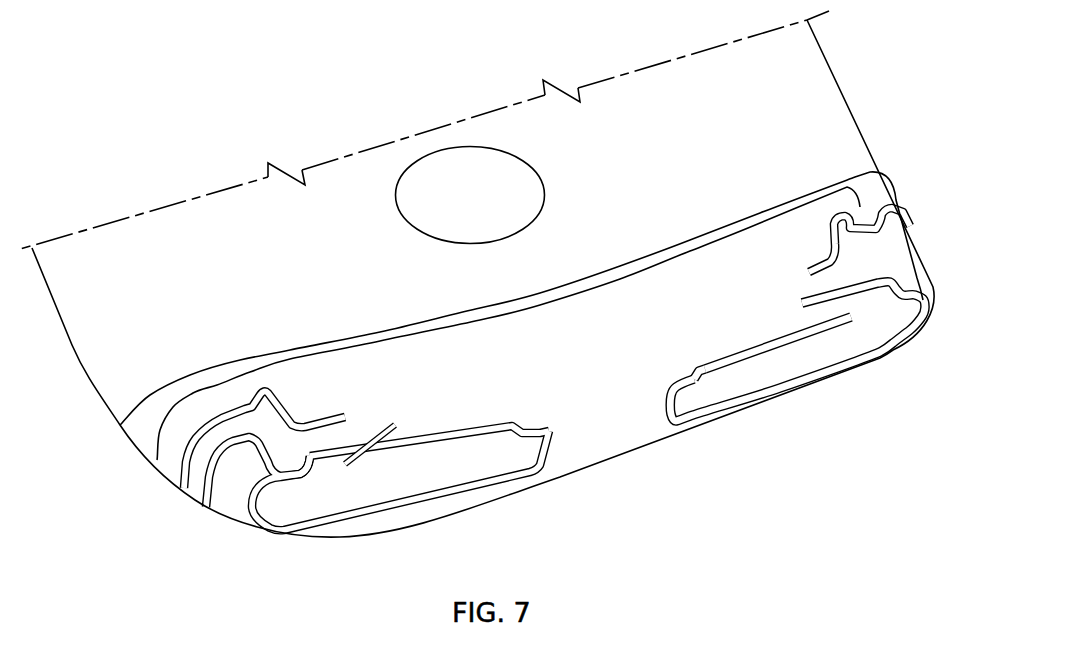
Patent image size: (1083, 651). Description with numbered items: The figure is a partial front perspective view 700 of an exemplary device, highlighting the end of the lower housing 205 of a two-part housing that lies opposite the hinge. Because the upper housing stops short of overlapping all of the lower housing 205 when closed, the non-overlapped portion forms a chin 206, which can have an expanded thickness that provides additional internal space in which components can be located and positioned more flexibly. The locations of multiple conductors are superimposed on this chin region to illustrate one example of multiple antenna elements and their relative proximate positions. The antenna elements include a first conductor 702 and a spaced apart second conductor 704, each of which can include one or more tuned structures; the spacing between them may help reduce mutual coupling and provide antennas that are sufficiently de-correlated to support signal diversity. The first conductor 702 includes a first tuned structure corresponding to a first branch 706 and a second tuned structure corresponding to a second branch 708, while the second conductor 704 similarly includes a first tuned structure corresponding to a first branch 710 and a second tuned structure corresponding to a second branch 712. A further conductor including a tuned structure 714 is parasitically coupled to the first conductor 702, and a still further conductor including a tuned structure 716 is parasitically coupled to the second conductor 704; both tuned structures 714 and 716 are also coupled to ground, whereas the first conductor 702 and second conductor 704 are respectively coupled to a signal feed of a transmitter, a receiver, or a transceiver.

The partial front perspective view 700 is at (475, 274).
The lower housing 205 is at (858, 208).
The chin 206 is at (613, 447).
The first conductor 702 is at (377, 485).
The second conductor 704 is at (797, 364).
The first branch 706 is at (458, 432).
The second branch 708 is at (377, 423).
The first branch 710 is at (716, 359).
The second branch 712 is at (857, 277).
The tuned structure 714 is at (322, 413).
The tuned structure 716 is at (808, 268).